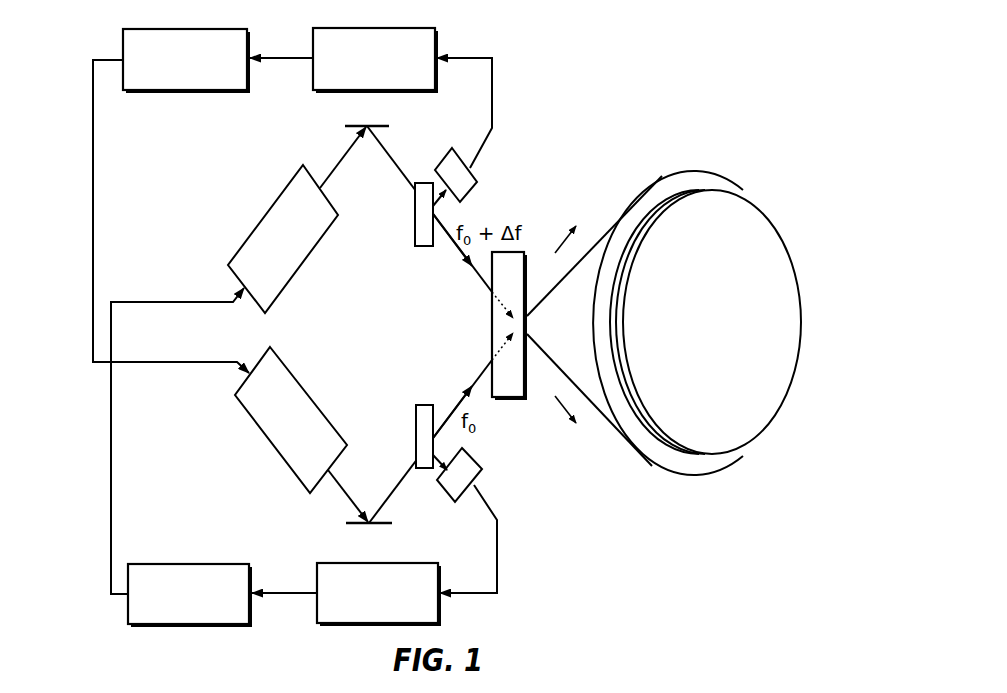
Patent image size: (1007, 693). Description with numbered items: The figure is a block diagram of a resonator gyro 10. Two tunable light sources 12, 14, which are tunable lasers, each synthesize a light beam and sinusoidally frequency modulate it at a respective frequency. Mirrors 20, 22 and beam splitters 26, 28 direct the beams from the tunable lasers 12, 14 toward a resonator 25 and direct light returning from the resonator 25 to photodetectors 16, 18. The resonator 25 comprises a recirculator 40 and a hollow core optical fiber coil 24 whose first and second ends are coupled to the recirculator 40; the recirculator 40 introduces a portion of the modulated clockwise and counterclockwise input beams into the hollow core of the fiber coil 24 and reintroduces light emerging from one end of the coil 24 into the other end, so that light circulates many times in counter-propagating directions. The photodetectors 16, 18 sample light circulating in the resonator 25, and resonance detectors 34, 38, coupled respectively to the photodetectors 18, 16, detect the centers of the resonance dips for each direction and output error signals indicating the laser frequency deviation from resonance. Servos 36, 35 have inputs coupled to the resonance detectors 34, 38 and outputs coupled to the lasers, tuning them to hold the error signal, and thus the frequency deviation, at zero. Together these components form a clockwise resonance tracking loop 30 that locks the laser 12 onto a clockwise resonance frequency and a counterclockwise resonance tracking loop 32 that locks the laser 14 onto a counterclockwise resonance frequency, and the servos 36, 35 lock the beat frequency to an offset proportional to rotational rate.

The resonator gyro 10 is at (663, 74).
The tunable light source 12 is at (291, 420).
The tunable light source 14 is at (283, 239).
The photodetector 16 is at (481, 470).
The photodetector 18 is at (478, 172).
The mirror 20 is at (362, 526).
The mirror 22 is at (357, 124).
The hollow core optical fiber coil 24 is at (742, 193).
The resonator 25 is at (609, 467).
The beam splitter 26 is at (416, 435).
The beam splitter 28 is at (415, 218).
The CW resonance tracking loop 30 is at (502, 91).
The CCW resonance tracking loop 32 is at (505, 557).
The resonance detector 34 is at (438, 42).
The servo 35 is at (152, 564).
The servo 36 is at (148, 93).
The resonance detector 38 is at (441, 609).
The recirculator 40 is at (488, 318).